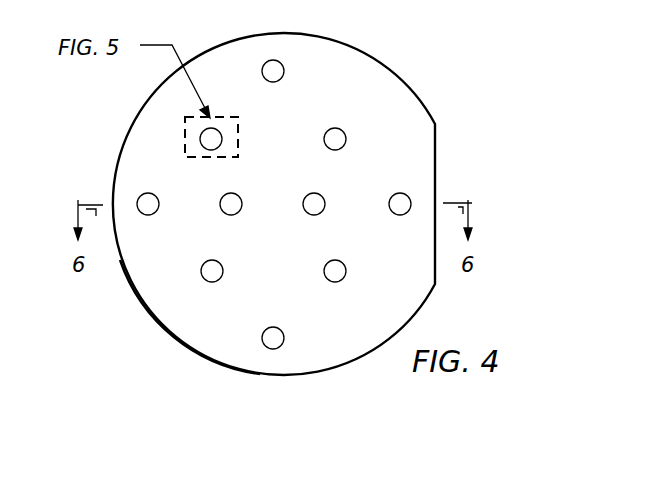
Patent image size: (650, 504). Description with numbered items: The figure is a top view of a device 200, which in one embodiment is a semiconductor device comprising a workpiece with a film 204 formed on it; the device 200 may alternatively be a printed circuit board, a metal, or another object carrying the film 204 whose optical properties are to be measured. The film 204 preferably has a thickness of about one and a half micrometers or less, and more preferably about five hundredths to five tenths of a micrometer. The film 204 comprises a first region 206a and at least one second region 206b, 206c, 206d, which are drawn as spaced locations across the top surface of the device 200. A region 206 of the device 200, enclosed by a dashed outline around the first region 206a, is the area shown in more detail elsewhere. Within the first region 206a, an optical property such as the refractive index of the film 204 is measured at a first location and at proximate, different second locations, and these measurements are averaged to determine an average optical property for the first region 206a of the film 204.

The device 200 is at (445, 86).
The film 204 is at (166, 314).
The region 206 is at (283, 334).
The first region 206a is at (217, 142).
The second region 206b is at (279, 74).
The second region 206c is at (341, 142).
The second region 206d is at (309, 212).